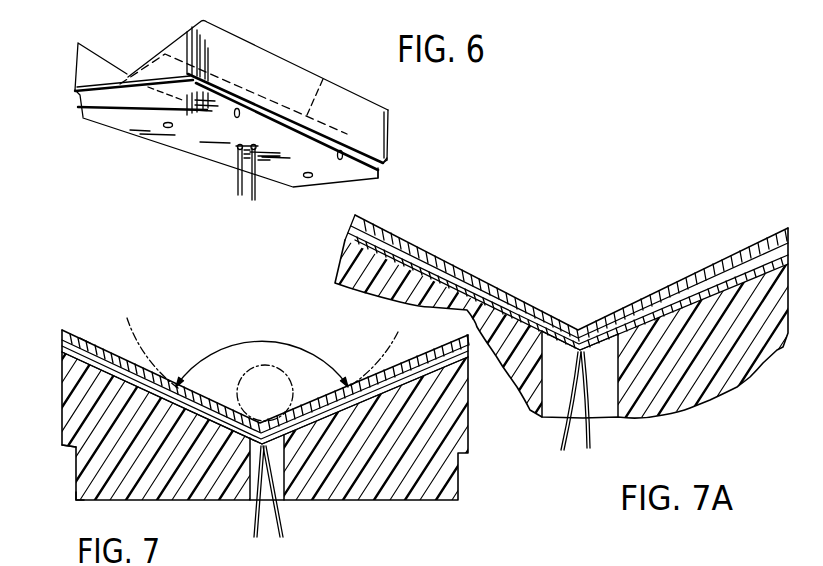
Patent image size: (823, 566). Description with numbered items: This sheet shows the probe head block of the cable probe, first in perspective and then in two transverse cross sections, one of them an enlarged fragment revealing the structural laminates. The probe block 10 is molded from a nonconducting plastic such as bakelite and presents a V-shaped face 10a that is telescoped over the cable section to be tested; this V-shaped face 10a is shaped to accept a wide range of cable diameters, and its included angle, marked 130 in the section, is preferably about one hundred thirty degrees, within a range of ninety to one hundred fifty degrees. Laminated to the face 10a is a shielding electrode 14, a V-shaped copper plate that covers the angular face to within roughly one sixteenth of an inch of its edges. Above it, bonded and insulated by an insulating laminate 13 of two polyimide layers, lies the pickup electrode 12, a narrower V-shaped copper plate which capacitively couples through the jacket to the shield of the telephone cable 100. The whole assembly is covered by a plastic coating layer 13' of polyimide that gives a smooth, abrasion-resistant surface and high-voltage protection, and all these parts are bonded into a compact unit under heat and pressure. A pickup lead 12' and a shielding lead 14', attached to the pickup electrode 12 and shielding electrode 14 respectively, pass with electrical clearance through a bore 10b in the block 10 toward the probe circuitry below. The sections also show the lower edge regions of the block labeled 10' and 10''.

In FIG. 6, the probe block 10 is at (245, 104).
In FIG. 7, the probe block 10 is at (288, 415).
In FIG. 7A, the probe block 10 is at (506, 332).
In FIG. 6, the V-shaped face 10a is at (127, 72).
In FIG. 6, the bore 10b is at (240, 163).
In FIG. 7, the bore 10b is at (252, 503).
In FIG. 7A, the bore 10b is at (613, 416).
In FIG. 6, the bottom corner of block 10' is at (400, 183).
In FIG. 7, the bottom corner of block 10' is at (62, 499).
In FIG. 6, the step of block 10'' is at (406, 164).
In FIG. 7, the step of block 10'' is at (53, 454).
In FIG. 6, the pickup electrode 12 is at (328, 86).
In FIG. 7A, the pickup electrode 12 is at (568, 288).
In FIG. 6, the pickup lead 12' is at (270, 184).
In FIG. 7, the pickup lead 12' is at (290, 491).
In FIG. 7A, the pickup lead 12' is at (601, 403).
In FIG. 7, the insulating laminate 13 is at (246, 377).
In FIG. 7A, the insulating laminate 13 is at (570, 292).
In FIG. 7, the plastic coating layer 13' is at (90, 325).
In FIG. 7A, the plastic coating layer 13' is at (566, 273).
In FIG. 7, the shielding electrode 14 is at (246, 394).
In FIG. 7A, the shielding electrode 14 is at (580, 356).
In FIG. 6, the shielding lead 14' is at (223, 184).
In FIG. 7, the shielding lead 14' is at (242, 496).
In FIG. 7A, the shielding lead 14' is at (556, 401).
In FIG. 7, the telephone cable 100 is at (286, 381).
In FIG. 7, the included angle of V-groove 130 is at (262, 357).